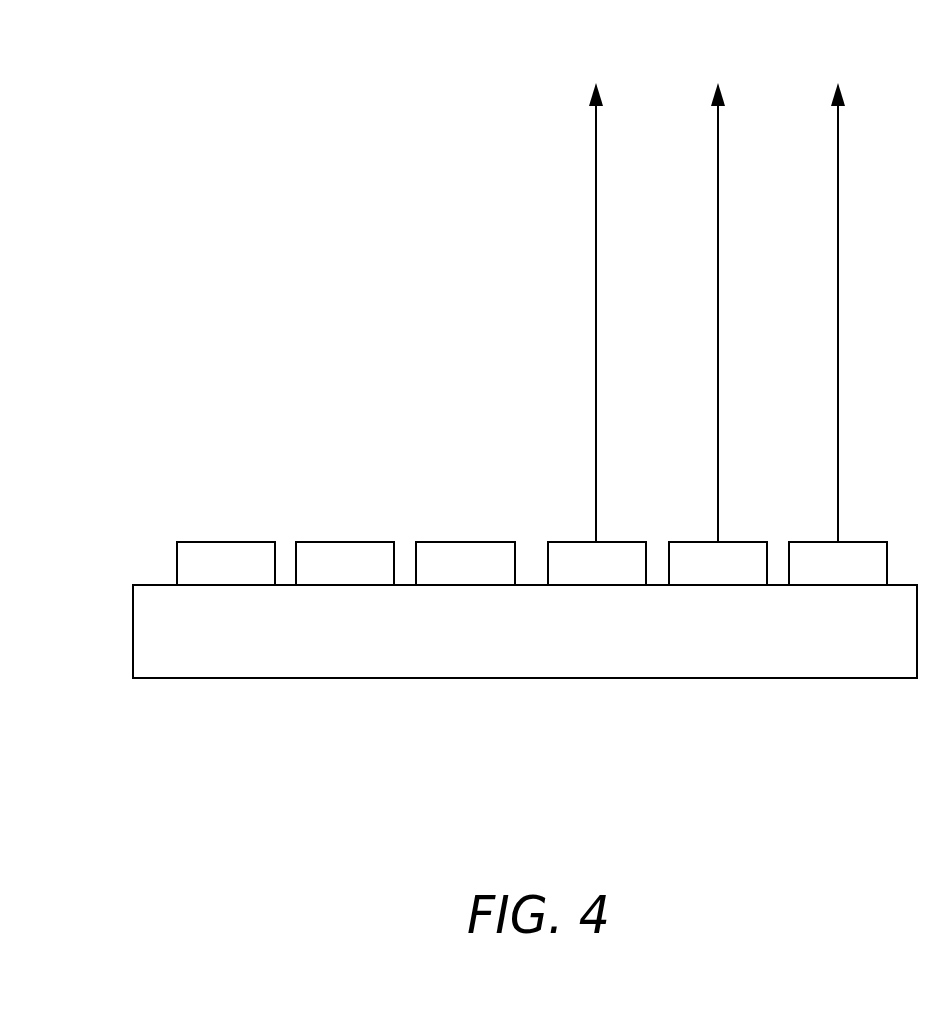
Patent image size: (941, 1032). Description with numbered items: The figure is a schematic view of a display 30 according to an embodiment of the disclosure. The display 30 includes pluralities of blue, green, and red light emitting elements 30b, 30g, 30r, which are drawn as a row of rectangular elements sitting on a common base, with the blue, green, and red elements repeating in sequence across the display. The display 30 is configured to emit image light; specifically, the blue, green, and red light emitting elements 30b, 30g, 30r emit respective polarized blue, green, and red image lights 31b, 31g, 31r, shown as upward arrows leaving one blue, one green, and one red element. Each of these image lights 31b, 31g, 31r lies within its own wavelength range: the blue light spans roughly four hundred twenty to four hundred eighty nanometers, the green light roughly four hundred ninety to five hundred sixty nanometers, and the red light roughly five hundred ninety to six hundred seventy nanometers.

The display 30 is at (150, 200).
The blue light emitting element 30b is at (197, 552).
The green light emitting element 30g is at (319, 552).
The red light emitting element 30r is at (439, 552).
The polarized blue image light 31b is at (596, 144).
The polarized green image light 31g is at (718, 142).
The polarized red image light 31r is at (838, 143).